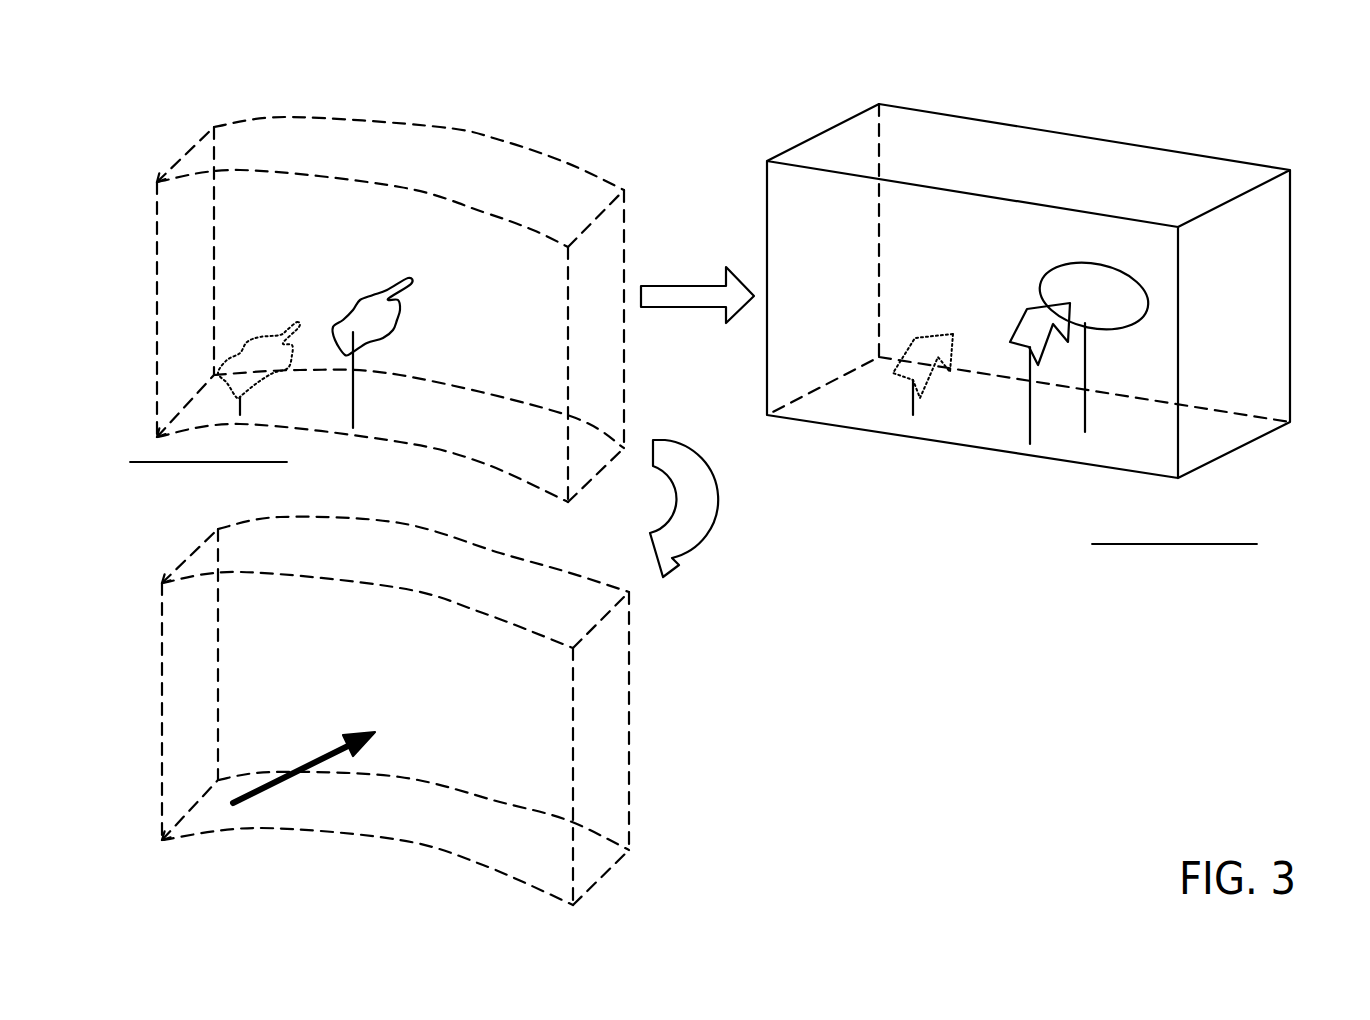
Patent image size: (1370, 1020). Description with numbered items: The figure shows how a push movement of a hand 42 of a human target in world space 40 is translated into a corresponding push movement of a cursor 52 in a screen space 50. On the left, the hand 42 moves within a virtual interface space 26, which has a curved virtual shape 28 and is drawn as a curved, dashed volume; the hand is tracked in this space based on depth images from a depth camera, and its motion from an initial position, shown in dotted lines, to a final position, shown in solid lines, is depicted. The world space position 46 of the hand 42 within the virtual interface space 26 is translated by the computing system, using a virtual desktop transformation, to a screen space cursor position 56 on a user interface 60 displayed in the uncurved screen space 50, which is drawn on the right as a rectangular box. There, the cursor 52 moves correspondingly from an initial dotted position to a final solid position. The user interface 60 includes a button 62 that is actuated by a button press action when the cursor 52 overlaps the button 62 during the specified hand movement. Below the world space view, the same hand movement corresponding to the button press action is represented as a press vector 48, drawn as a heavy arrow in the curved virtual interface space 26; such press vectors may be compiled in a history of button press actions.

The virtual interface space 26 is at (289, 137).
The curved virtual shape 28 is at (448, 130).
The world space 40 is at (389, 297).
The hand 42 is at (380, 293).
The world space position 46 is at (357, 427).
The press vector 48 is at (328, 750).
The screen space 50 is at (1028, 317).
The cursor 52 is at (1012, 320).
The screen space cursor position 56 is at (1030, 446).
The user interface 60 is at (1013, 146).
The button 62 is at (1086, 284).